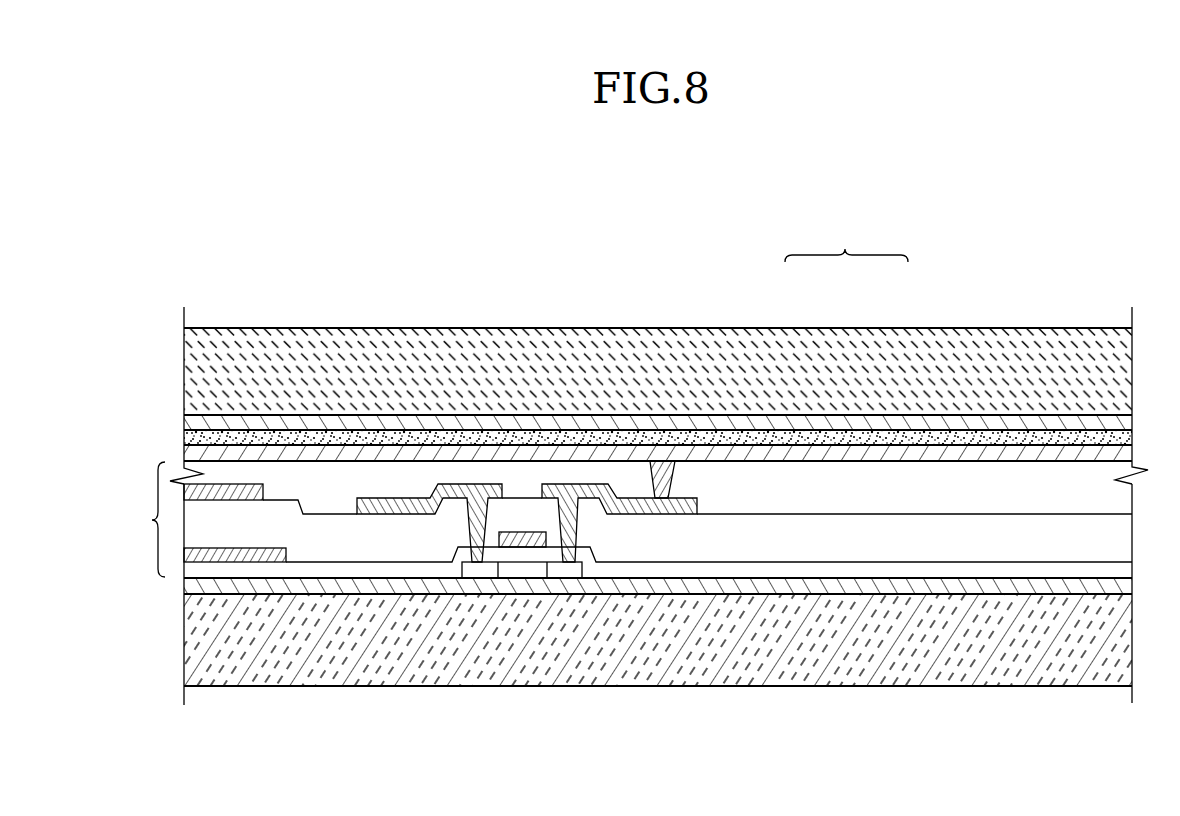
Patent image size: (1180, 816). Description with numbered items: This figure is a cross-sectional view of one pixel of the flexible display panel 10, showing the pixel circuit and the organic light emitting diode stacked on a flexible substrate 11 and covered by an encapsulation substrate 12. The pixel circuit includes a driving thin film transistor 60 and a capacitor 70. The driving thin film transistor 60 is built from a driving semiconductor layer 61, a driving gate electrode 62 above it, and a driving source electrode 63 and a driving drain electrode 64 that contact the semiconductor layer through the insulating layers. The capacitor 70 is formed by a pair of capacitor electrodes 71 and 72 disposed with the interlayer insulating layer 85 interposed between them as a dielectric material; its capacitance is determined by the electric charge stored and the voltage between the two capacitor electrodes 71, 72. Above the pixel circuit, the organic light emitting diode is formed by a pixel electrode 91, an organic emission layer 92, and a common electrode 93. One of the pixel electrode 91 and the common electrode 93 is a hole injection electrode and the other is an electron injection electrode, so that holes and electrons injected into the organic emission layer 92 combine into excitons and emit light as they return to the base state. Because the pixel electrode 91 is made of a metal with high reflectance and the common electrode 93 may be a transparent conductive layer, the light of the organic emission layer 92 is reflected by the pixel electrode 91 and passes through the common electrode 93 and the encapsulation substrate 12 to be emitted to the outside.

The flexible display panel 10 is at (586, 235).
The flexible substrate 11 is at (1032, 648).
The encapsulation substrate 12 is at (445, 357).
The driving thin film transistor 60 is at (527, 634).
The driving semiconductor layer 61 is at (523, 578).
The driving gate electrode 62 is at (543, 538).
The driving source electrode 63 is at (395, 514).
The driving drain electrode 64 is at (619, 616).
The capacitor 70 is at (235, 629).
The capacitor electrode 71 is at (221, 500).
The capacitor electrode 72 is at (275, 562).
The interlayer insulating layer 85 is at (857, 542).
The pixel electrode 91 is at (803, 455).
The organic emission layer 92 is at (852, 437).
The common electrode 93 is at (898, 420).